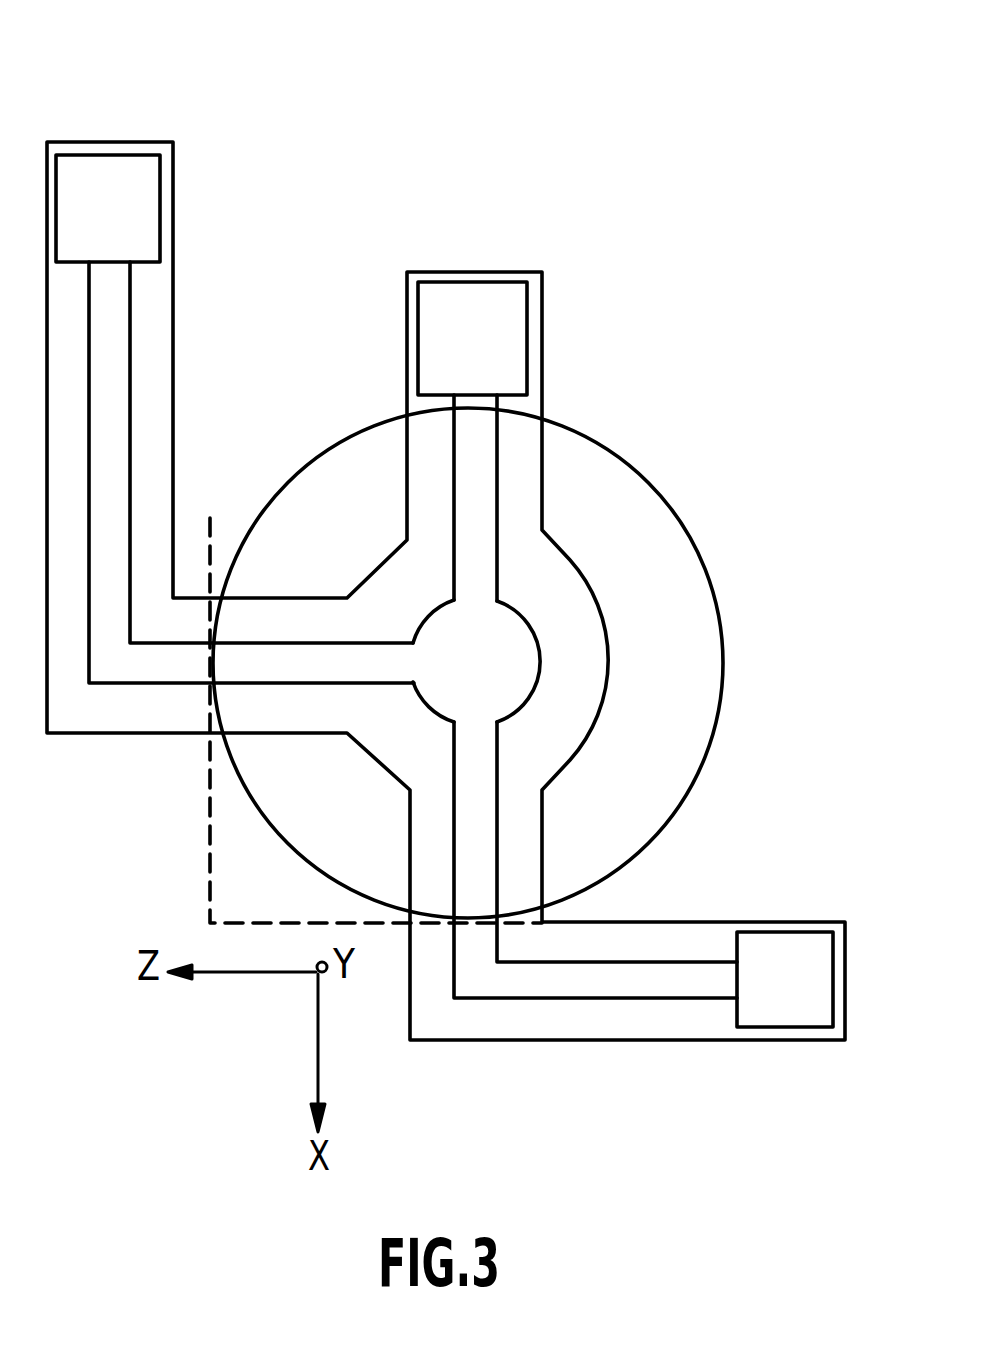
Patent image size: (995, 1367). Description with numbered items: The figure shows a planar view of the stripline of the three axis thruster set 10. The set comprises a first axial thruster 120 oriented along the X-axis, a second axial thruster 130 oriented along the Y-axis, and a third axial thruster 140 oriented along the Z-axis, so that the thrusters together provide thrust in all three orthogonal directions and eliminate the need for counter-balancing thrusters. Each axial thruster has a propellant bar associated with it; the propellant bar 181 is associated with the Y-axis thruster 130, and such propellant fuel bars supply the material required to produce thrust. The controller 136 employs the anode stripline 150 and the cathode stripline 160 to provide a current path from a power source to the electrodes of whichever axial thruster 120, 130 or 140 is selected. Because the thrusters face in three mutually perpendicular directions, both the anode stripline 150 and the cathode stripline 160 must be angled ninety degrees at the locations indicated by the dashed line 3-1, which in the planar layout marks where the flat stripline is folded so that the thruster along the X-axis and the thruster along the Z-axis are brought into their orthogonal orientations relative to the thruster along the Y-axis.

The three axis thruster set 10 is at (215, 50).
The first axial thruster 120 is at (605, 1056).
The second axial thruster 130 is at (560, 302).
The third axial thruster 140 is at (186, 236).
The anode stripline 150 is at (572, 562).
The cathode stripline 160 is at (508, 655).
The propellant bar 181 is at (498, 438).
The controller 136 is at (698, 785).
The dashed line 3-1 is at (192, 817).